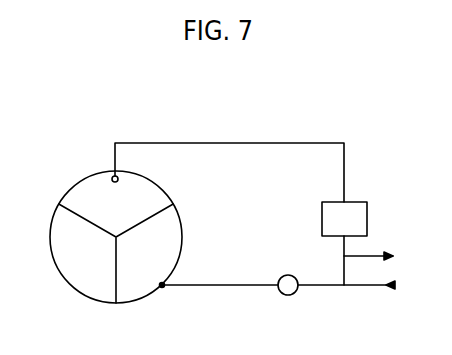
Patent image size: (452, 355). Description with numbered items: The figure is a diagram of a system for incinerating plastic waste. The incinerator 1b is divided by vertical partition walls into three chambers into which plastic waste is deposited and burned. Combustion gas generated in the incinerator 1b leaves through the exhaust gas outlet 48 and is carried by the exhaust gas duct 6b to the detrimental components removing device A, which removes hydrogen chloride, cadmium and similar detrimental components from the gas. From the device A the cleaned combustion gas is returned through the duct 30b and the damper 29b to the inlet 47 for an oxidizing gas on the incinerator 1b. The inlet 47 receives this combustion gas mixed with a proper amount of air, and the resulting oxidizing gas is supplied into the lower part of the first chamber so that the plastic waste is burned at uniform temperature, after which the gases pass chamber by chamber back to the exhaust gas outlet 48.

The incinerator 1b is at (63, 280).
The exhaust gas duct 6b is at (240, 143).
The exhaust gas outlet 48 is at (118, 178).
The detrimental components removing device A is at (358, 220).
The inlet for an oxidizing gas 47 is at (162, 287).
The duct 30b is at (233, 287).
The damper 29b is at (296, 291).